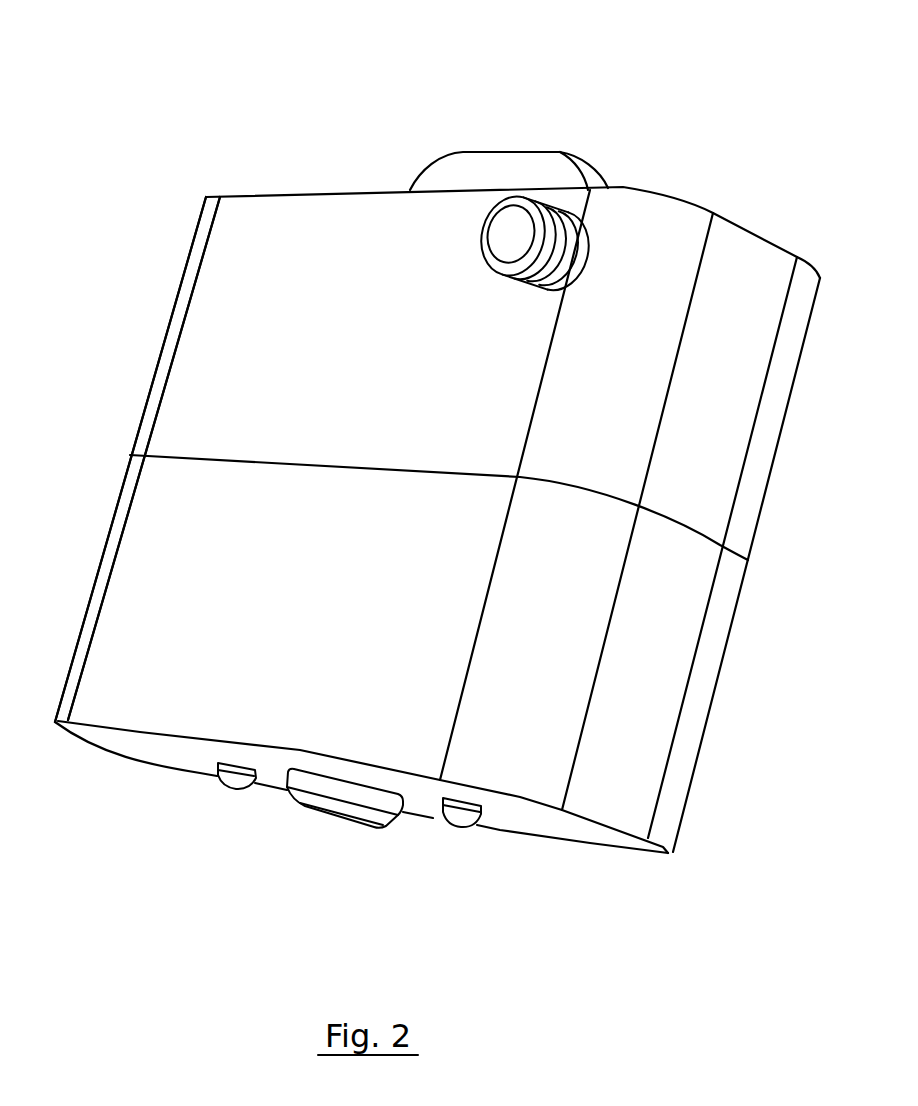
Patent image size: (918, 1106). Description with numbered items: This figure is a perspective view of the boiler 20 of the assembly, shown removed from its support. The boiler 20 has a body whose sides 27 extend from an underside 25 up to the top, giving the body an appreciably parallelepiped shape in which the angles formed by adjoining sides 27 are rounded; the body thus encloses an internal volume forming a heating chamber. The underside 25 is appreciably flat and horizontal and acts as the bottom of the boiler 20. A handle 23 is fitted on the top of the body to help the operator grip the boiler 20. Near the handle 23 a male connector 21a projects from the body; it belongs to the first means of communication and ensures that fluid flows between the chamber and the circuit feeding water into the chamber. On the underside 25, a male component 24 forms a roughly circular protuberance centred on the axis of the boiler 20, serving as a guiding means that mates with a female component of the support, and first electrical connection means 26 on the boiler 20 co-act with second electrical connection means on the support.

The boiler 20 is at (710, 165).
The male connector 21a is at (510, 235).
The handle 23 is at (502, 170).
The male component 24 is at (397, 815).
The underside 25 is at (573, 832).
The first electrical connection means 26 is at (225, 790).
The sides 27 is at (252, 333).